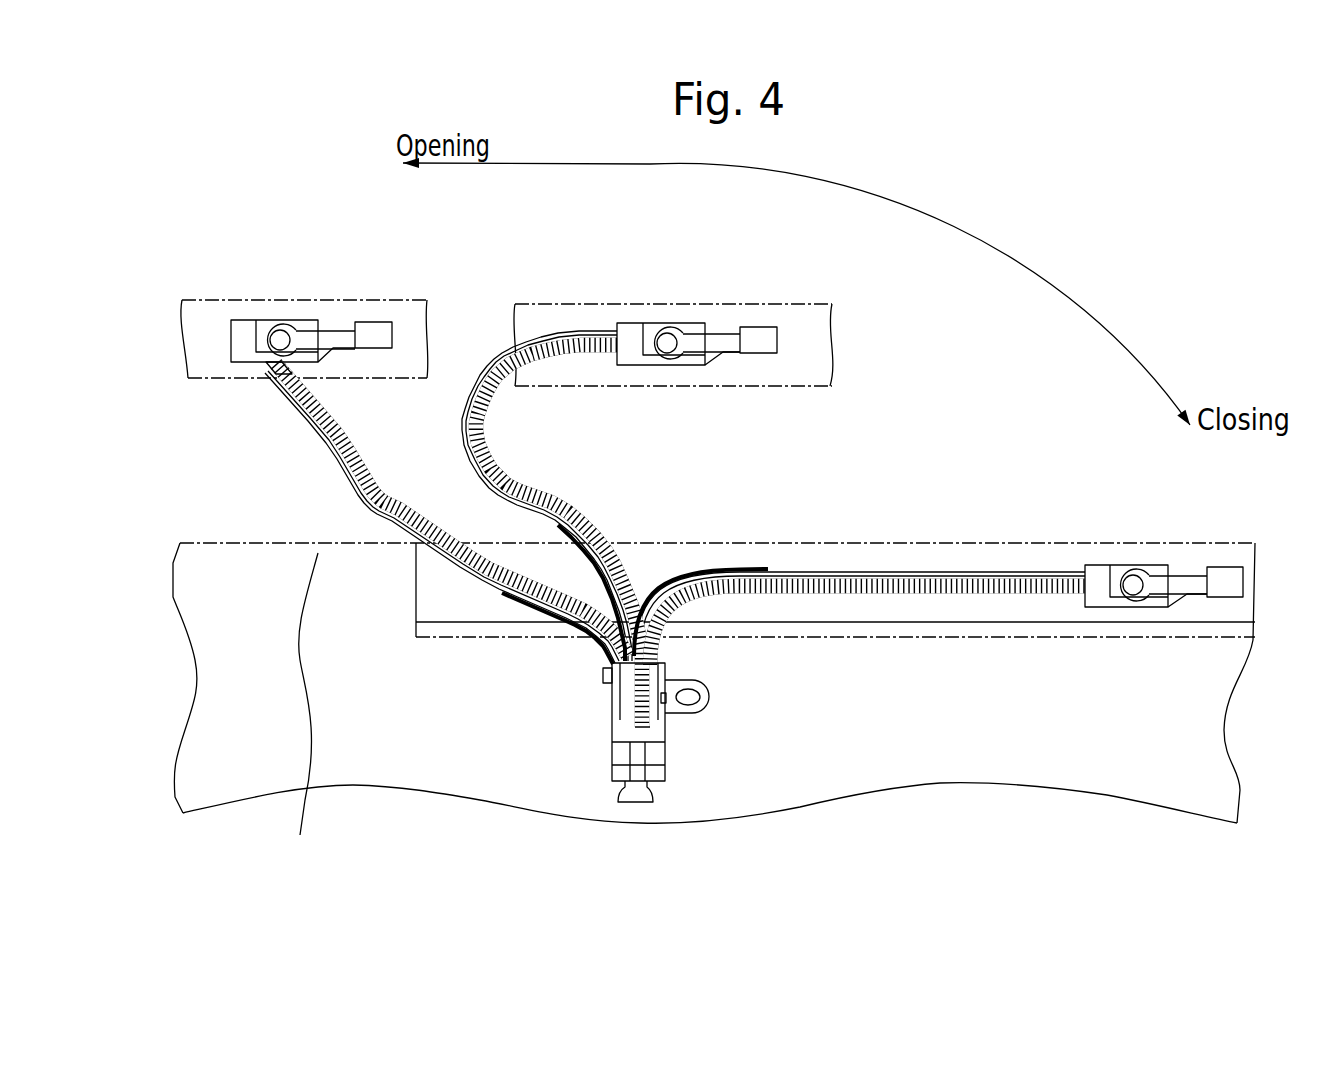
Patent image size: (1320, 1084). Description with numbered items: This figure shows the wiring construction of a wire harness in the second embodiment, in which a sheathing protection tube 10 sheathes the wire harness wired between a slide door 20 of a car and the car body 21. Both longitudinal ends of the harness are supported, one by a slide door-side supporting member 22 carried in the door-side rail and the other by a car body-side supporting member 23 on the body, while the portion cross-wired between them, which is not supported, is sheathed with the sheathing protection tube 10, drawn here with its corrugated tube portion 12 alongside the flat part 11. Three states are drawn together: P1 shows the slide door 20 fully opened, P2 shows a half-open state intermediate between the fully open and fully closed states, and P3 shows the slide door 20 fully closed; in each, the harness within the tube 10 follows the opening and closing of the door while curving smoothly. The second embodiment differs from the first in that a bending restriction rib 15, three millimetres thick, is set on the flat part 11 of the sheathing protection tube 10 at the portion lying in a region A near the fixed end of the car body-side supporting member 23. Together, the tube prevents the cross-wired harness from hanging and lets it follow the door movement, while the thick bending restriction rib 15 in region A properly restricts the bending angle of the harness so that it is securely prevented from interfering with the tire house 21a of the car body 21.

The sheathing protection tube 10 is at (343, 474).
The flat part 11 is at (353, 437).
The corrugated tube 12 is at (348, 430).
The bending restriction rib 15 is at (503, 606).
The slide door 20 is at (318, 300).
The car body 21 is at (987, 707).
The tire house 21a is at (305, 713).
The slide door-side supporting member 22 is at (248, 320).
The car body-side supporting member 23 is at (612, 710).
The fully open state P1 is at (288, 296).
The half-open state P2 is at (666, 296).
The fully closed state P3 is at (1132, 534).
The region A is at (507, 590).